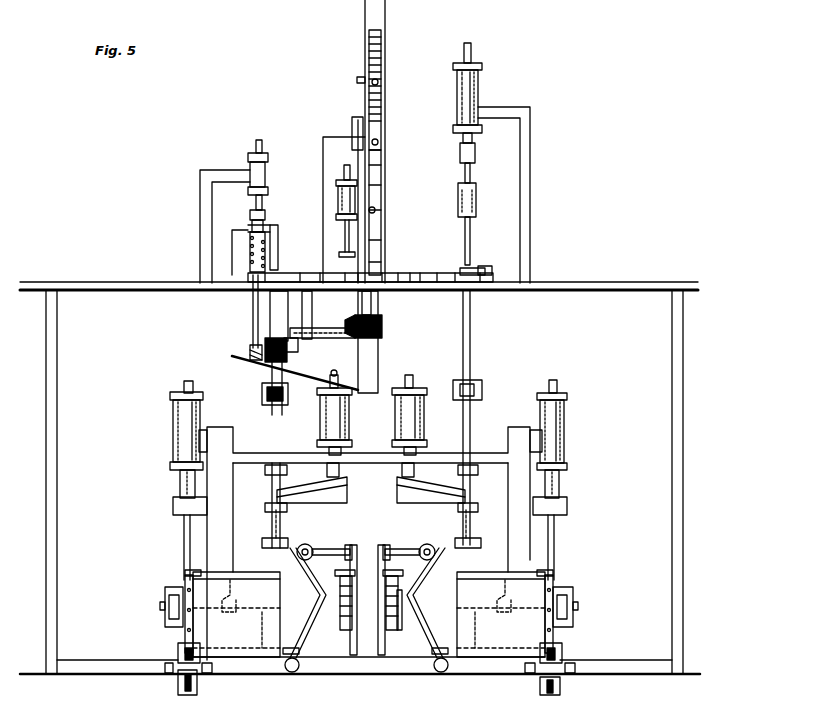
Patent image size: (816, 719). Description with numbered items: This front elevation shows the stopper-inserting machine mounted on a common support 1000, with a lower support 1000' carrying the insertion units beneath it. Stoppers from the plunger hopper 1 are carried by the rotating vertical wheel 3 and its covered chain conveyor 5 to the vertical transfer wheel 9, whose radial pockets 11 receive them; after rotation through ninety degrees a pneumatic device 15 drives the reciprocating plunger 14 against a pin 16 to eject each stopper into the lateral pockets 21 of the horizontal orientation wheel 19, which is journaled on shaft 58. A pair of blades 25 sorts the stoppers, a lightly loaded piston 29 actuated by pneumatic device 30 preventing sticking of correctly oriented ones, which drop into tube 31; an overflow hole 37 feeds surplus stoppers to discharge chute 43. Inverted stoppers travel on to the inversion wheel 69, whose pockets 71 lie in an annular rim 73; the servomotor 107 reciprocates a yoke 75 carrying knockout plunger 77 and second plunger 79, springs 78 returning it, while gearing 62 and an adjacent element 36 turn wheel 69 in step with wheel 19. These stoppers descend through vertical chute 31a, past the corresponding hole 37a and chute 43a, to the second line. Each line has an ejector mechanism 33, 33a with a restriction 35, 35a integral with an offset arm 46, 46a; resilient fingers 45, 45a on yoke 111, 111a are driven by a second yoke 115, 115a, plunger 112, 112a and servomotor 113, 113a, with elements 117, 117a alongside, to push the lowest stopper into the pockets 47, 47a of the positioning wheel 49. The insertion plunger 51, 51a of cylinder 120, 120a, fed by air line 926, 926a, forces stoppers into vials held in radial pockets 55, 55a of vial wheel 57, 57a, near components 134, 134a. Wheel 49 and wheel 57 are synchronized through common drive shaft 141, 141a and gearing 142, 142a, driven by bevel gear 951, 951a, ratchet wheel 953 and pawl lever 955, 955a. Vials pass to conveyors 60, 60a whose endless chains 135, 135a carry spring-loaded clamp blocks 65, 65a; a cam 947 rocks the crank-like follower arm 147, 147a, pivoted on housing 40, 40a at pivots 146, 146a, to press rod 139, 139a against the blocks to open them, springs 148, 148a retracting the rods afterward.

The common support 1000 is at (360, 465).
The shelf 1000' is at (370, 532).
The chain conveyor 5 is at (380, 18).
The vertical transfer wheel 9 is at (381, 86).
The pin 16 is at (357, 80).
The radial pockets 11 is at (377, 146).
The pneumatic device 30 is at (481, 80).
The reciprocating piston 29 is at (471, 262).
The blades 25 is at (480, 270).
The pneumatic device 15 is at (338, 192).
The reciprocating plunger 14 is at (345, 236).
The servomotor 107 is at (263, 152).
The reciprocating yoke 75 is at (252, 224).
The knockout plunger 77 is at (279, 258).
The springs 78 is at (240, 264).
The horizontal orientation wheel 19 is at (425, 275).
The lateral pockets 21 is at (410, 292).
The plunger hopper 1 is at (237, 302).
The rotating vertical wheel 3 is at (380, 337).
The shaft 58 is at (382, 305).
The gearing 62 is at (355, 322).
The bar 36 is at (322, 342).
The annular rim 73 is at (270, 298).
The pockets 71 is at (268, 316).
The inversion wheel 69 is at (288, 355).
The second plunger 79 is at (292, 342).
The vertical chute 31a is at (250, 356).
The block 43a is at (262, 393).
The guide 37a is at (285, 395).
The tube 31 is at (472, 306).
The discharge chute 43 is at (482, 392).
The hole 37 is at (482, 386).
The cylinder 113a is at (349, 410).
The pneumatic servomotor 113 is at (395, 430).
The port 926a is at (186, 384).
The cylinder 120a is at (175, 412).
The piston 115a is at (180, 498).
The block 35a is at (270, 553).
The rod 51a is at (184, 556).
The bar 55a is at (185, 626).
The switch 134a is at (162, 606).
The block 65a is at (178, 653).
The block 135a is at (178, 684).
The assembly line 60a is at (205, 683).
The air line 926 is at (558, 386).
The servomotor 120 is at (565, 411).
The second yoke 115 is at (560, 497).
The restriction 35 is at (482, 555).
The insertion plunger 51 is at (556, 548).
The radial pockets 55 is at (560, 580).
The switch 134 is at (580, 606).
The clamp blocks 65 is at (562, 652).
The endless chain 135 is at (562, 660).
The conveyor 60 is at (525, 683).
The plunger positioning wheel 49 is at (369, 614).
The housing 47a is at (212, 589).
The pockets 47 is at (523, 589).
The funnel 57a is at (230, 614).
The vial supporting wheel 57 is at (505, 614).
The tube 142a is at (262, 628).
The gearing 142 is at (489, 630).
The housing 40 is at (369, 681).
The housing 40a is at (265, 670).
The reciprocable rod 139a is at (256, 662).
The reciprocable rod 139 is at (484, 662).
The rod 112a is at (330, 478).
The collar 33a is at (268, 496).
The wedge 111a is at (285, 507).
The pin 117a is at (283, 523).
The collar 46a is at (265, 507).
The block 45a is at (290, 541).
The reciprocating plunger 112 is at (405, 470).
The plunger ejector mechanism 33 is at (476, 510).
The yoke 111 is at (455, 495).
The pin 117 is at (462, 522).
The offset arm 46 is at (456, 536).
The resilient fingers 45 is at (476, 536).
The roller 951a is at (312, 550).
The bevel gear 951 is at (421, 548).
The follower arm 147a is at (318, 594).
The follower arm 147 is at (448, 600).
The cam 947 is at (443, 572).
The spring 148a is at (286, 673).
The spring 148 is at (445, 672).
The pivot 146a is at (300, 666).
The pivot 146 is at (432, 666).
The plate 955a is at (351, 649).
The pawl operating lever 955 is at (390, 600).
The pawl 141a is at (342, 616).
The common drive shaft 141 is at (434, 600).
The ratchet wheel 953 is at (400, 624).